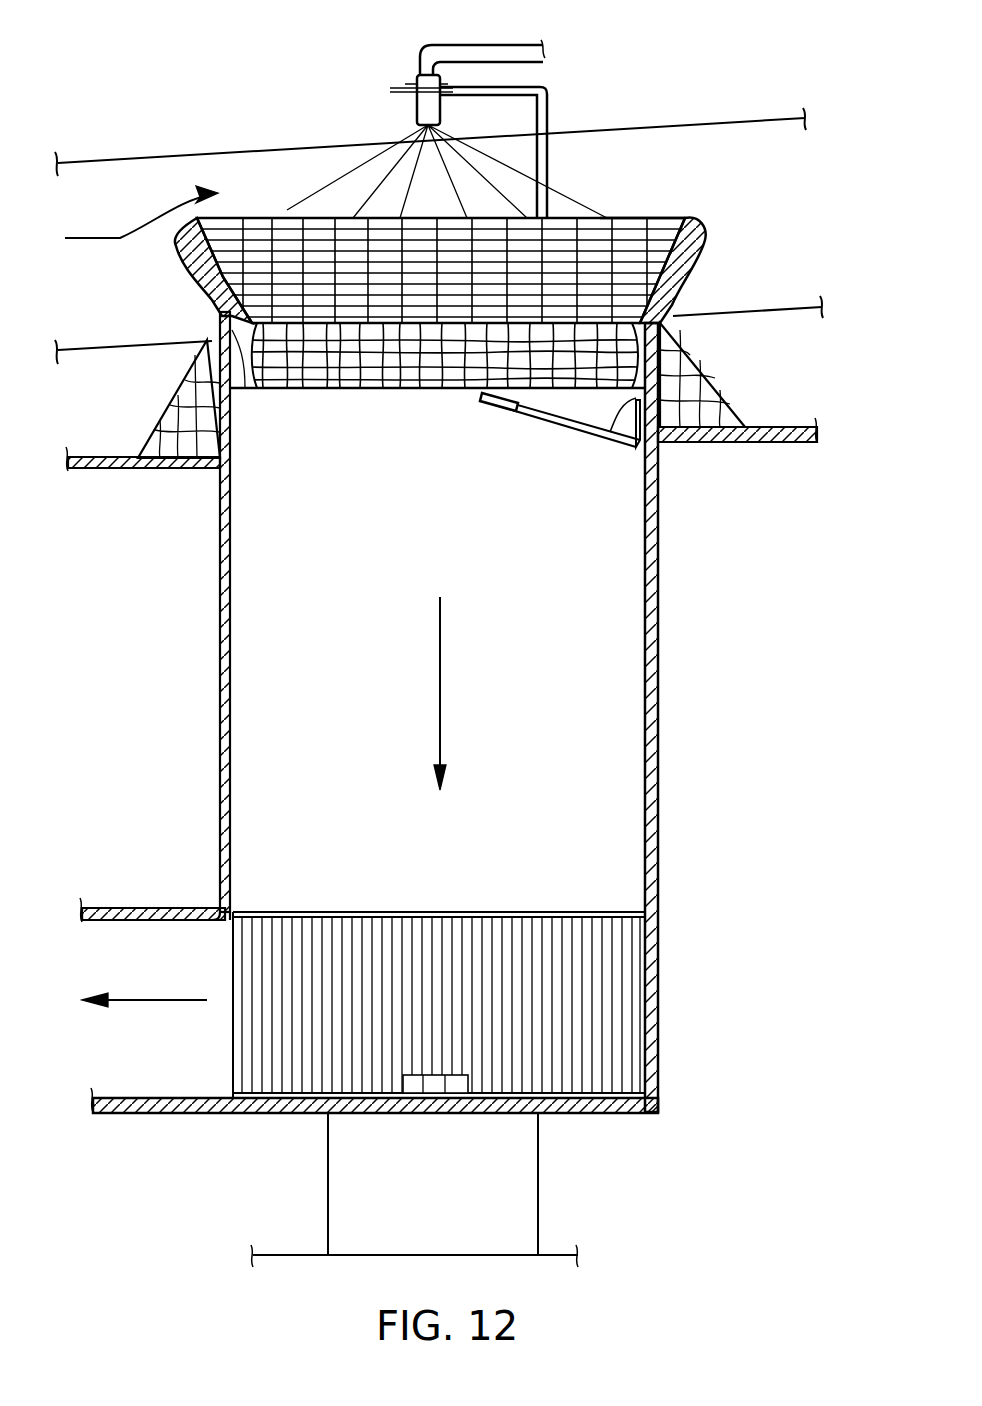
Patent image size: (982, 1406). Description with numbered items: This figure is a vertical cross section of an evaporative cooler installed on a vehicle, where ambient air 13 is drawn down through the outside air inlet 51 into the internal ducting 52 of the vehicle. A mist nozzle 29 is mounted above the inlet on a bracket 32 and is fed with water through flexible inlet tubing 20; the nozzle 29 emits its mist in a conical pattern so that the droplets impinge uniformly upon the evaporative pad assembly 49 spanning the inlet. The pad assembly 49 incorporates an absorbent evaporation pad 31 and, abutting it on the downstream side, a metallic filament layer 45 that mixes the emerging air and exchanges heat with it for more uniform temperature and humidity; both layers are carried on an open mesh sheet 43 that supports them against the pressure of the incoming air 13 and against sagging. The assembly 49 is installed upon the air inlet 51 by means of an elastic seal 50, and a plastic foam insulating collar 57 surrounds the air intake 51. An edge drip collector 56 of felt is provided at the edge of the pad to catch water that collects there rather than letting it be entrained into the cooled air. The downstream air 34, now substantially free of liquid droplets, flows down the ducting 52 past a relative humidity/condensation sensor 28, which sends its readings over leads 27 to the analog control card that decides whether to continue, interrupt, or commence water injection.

The ambient air 13 is at (95, 238).
The inlet tubing 20 is at (482, 46).
The leads 27 is at (720, 376).
The relative humidity/condensation sensor 28 is at (483, 393).
The mist nozzle 29 is at (424, 107).
The evaporation pad 31 is at (555, 247).
The bracket 32 is at (550, 103).
The downstream air 34 is at (440, 708).
The open mesh sheet 43 is at (323, 390).
The metallic filament layer 45 is at (377, 390).
The evaporative pad assembly 49 is at (617, 216).
The elastic seal 50 is at (706, 240).
The outside air inlet 51 is at (203, 297).
The internal ducting 52 is at (220, 588).
The edge drip collector 56 is at (252, 390).
The insulating collar 57 is at (178, 408).